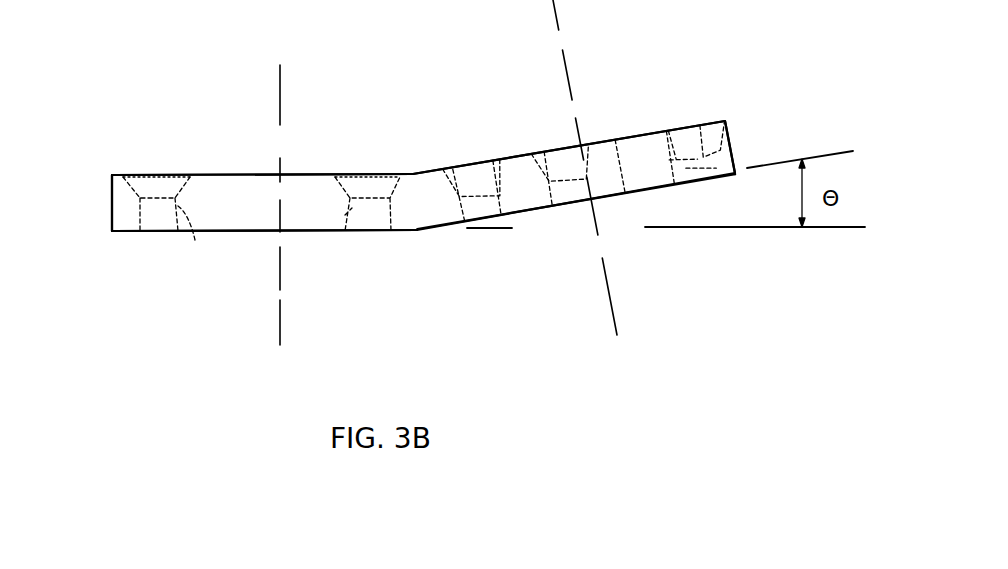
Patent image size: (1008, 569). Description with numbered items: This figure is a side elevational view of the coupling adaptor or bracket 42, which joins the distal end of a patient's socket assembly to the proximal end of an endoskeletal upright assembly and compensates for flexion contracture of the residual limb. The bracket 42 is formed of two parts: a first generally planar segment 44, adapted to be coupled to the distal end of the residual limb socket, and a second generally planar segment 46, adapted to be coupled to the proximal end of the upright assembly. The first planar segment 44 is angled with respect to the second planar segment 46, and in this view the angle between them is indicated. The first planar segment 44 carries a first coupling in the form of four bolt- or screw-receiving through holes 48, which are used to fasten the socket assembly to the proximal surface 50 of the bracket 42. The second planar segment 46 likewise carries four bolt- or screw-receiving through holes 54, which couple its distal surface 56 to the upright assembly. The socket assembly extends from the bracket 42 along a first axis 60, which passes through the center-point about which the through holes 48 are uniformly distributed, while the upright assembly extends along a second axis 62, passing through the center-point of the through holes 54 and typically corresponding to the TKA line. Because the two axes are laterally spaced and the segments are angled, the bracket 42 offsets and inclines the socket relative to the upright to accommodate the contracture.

The coupling adaptor or bracket 42 is at (607, 103).
The first generally planar segment 44 is at (530, 195).
The second generally planar segment 46 is at (308, 192).
The through holes 48 is at (493, 172).
The proximal surface 50 is at (628, 137).
The through holes 54 is at (182, 240).
The distal surface 56 is at (137, 233).
The first axis 60 is at (610, 292).
The second axis 62 is at (278, 308).